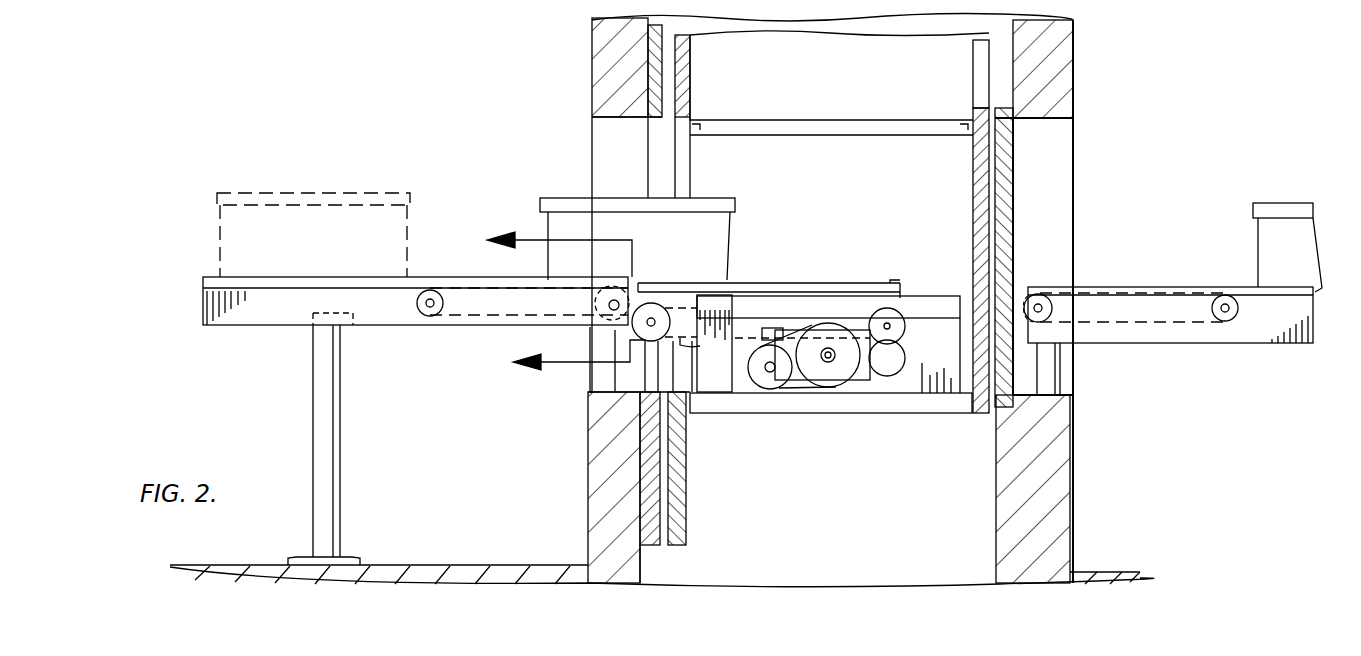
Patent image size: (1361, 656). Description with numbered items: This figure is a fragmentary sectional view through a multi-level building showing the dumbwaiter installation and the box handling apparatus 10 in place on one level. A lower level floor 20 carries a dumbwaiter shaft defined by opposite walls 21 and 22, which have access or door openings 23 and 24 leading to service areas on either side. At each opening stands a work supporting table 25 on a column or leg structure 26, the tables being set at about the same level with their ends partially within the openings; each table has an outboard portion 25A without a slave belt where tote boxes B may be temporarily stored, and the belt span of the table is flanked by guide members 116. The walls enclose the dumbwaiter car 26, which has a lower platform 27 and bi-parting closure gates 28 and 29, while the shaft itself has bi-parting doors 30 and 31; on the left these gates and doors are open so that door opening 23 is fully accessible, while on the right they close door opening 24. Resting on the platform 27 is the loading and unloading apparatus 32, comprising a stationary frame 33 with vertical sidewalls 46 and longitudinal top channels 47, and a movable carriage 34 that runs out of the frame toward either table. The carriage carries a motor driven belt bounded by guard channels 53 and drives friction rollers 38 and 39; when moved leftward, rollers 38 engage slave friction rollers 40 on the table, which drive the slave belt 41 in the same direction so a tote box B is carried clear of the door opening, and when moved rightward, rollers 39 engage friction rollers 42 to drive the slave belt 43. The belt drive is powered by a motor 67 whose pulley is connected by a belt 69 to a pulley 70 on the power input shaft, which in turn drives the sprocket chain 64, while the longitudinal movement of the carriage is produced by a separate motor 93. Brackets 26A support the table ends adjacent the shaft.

The direction of travel arrow 10 is at (548, 302).
The lower level floor 20 is at (485, 565).
The wall 21 is at (588, 464).
The wall 22 is at (1060, 484).
The door opening 23 is at (600, 128).
The door opening 24 is at (1065, 144).
The table 25 is at (400, 328).
The outboard portion 25A is at (238, 328).
The dumbwaiter elevator car 26 is at (856, 84).
The support bracket 26A is at (598, 390).
The lower platform 27 is at (850, 413).
The closure gate 28 is at (688, 76).
The closure gate 29 is at (978, 268).
The shaft door 30 is at (648, 50).
The shaft door 31 is at (1015, 262).
The loading and unloading apparatus 32 is at (806, 275).
The stationary frame 33 is at (845, 296).
The movable carriage 34 is at (748, 282).
The friction roller 38 is at (651, 311).
The friction roller 39 is at (905, 320).
The slave friction roller 40 is at (628, 300).
The slave belt 41 is at (470, 285).
The friction roller 42 is at (1050, 328).
The slave belt 43 is at (1157, 290).
The vertical sidewall 46 is at (712, 413).
The longitudinal top channel 47 is at (732, 308).
The guard channel 53 is at (898, 282).
The sprocket chain 64 is at (688, 344).
The motor 67 is at (765, 391).
The belt 69 is at (783, 392).
The pulley 70 is at (828, 392).
The motor 93 is at (898, 396).
The guide member 116 is at (493, 285).
The tote box B is at (410, 200).